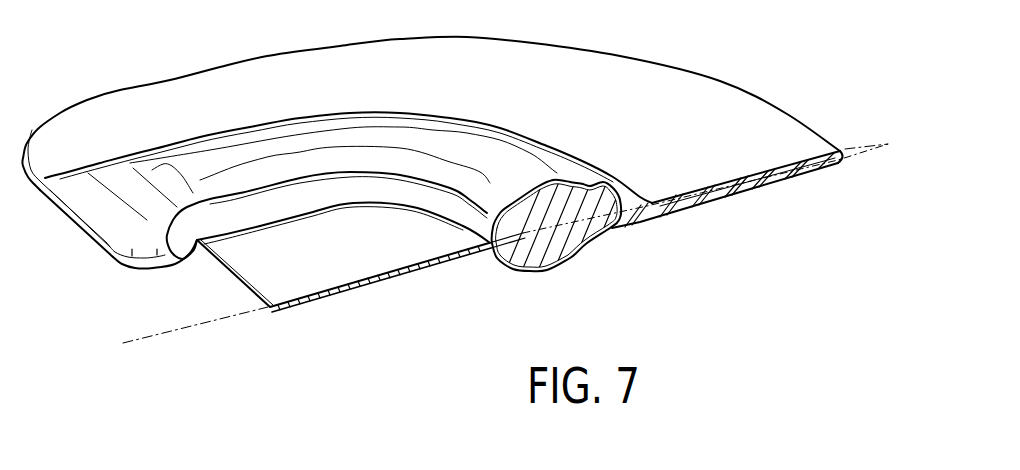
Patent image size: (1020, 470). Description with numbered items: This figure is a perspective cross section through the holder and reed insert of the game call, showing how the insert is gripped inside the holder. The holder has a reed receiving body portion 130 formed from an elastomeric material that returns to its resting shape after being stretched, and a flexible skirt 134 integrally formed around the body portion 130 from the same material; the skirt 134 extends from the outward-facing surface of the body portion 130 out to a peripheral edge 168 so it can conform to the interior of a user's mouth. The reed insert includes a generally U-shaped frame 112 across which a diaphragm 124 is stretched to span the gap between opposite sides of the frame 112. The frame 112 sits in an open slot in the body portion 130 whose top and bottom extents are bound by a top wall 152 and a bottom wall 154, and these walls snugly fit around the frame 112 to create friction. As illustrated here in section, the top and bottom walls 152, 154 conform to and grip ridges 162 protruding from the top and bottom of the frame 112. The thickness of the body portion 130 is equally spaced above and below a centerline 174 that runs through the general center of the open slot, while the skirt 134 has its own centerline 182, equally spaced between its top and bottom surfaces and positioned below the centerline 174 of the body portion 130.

The frame 112 is at (530, 248).
The diaphragm 124 is at (280, 308).
The reed receiving body portion 130 is at (380, 133).
The skirt 134 is at (697, 93).
The top wall 152 is at (583, 182).
The bottom wall 154 is at (585, 248).
The ridges 162 is at (548, 187).
The peripheral edge 168 is at (567, 44).
The centerline 174 is at (187, 328).
The centerline 182 is at (866, 150).